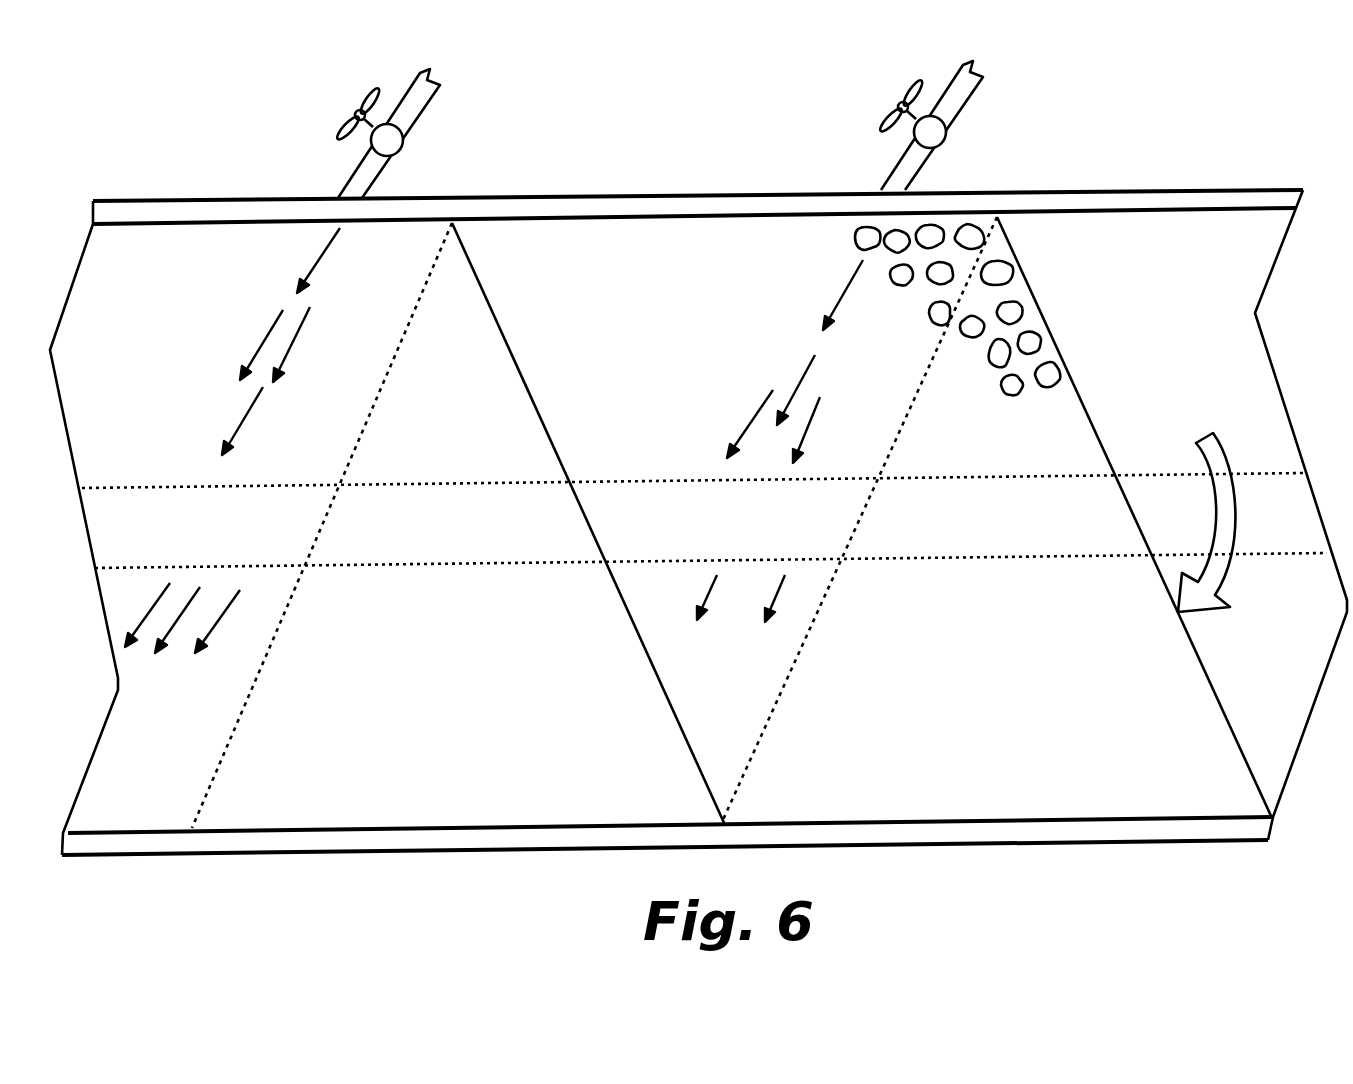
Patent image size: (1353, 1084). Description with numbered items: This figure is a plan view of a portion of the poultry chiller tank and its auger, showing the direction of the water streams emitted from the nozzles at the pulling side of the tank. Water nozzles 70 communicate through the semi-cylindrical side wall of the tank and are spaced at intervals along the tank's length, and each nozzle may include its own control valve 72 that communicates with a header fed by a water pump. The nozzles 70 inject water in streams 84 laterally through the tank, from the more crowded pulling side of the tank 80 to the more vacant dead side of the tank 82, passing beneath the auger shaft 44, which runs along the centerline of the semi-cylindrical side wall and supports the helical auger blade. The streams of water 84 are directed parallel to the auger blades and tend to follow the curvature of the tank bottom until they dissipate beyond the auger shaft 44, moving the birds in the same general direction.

The water nozzle 70 is at (347, 177).
The control valve 72 is at (405, 140).
The water stream 84 is at (275, 327).
The pulling side of the tank 80 is at (1142, 281).
The dead side of the tank 82 is at (134, 760).
The auger shaft 44 is at (633, 510).